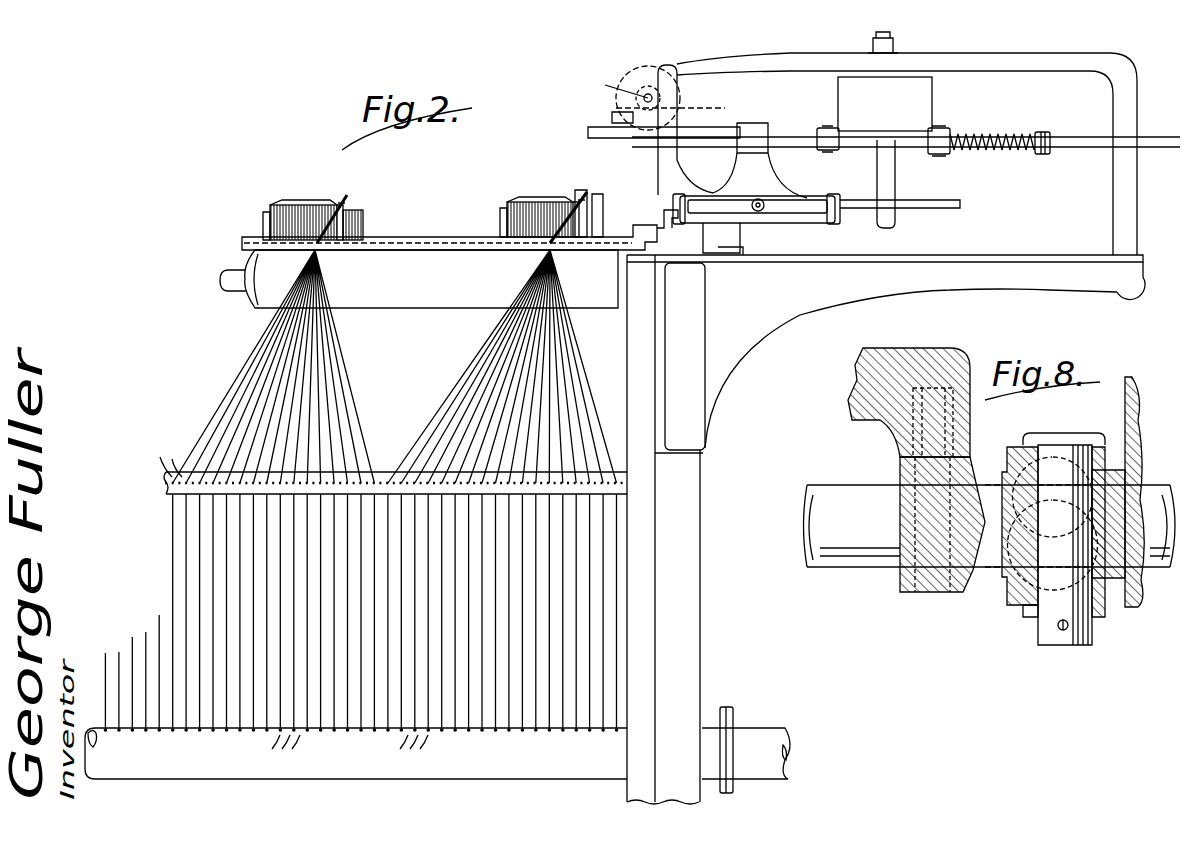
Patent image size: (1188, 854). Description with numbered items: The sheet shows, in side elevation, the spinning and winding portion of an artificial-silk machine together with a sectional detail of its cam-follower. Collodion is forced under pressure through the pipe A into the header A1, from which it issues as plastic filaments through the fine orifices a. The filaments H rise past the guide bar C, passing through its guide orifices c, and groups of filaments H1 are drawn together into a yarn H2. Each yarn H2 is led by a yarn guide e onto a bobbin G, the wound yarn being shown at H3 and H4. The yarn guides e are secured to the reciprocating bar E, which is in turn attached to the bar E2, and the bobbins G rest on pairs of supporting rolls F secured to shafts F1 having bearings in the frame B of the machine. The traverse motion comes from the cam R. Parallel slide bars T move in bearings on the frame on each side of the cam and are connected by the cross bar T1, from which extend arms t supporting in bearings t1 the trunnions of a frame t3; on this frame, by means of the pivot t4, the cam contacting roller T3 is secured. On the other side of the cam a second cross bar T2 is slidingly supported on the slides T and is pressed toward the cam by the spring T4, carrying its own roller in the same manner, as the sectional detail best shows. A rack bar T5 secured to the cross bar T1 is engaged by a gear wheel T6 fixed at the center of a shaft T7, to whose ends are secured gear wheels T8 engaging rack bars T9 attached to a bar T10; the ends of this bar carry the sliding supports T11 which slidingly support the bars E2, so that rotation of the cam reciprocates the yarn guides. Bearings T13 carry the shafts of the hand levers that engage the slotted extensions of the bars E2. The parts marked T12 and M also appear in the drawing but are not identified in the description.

In FIG. 2, the pipe A is at (746, 750).
In FIG. 2, the header A1 is at (356, 753).
In FIG. 2, the fine orifices a is at (350, 750).
In FIG. 2, the frame B is at (666, 529).
In FIG. 2, the guide bar C is at (158, 493).
In FIG. 2, the guide orifices c is at (176, 470).
In FIG. 2, the filaments H is at (360, 612).
In FIG. 2, the groups of filaments H1 is at (395, 366).
In FIG. 2, the yarn H2 is at (576, 202).
In FIG. 2, the wound yarn H3 is at (540, 202).
In FIG. 2, the wound yarn H4 is at (613, 204).
In FIG. 2, the bobbin G is at (268, 218).
In FIG. 2, the yarn guide e is at (347, 196).
In FIG. 2, the reciprocating bar E is at (410, 237).
In FIG. 2, the bar E2 is at (938, 200).
In FIG. 2, the supporting rolls F is at (431, 279).
In FIG. 2, the shaft F1 is at (218, 282).
In FIG. 2, the slide bars T is at (1078, 150).
In FIG. 8, the slide bars T is at (990, 526).
In FIG. 2, the cross bar T1 is at (825, 142).
In FIG. 8, the cross bar T1 is at (947, 592).
In FIG. 2, the cross bar T2 is at (968, 133).
In FIG. 2, the cam contacting roller T3 is at (950, 118).
In FIG. 8, the cam contacting roller T3 is at (1113, 580).
In FIG. 2, the spring T4 is at (1008, 132).
In FIG. 2, the rack bar T5 is at (722, 112).
In FIG. 8, the rack bar T5 is at (865, 383).
In FIG. 2, the gear wheel T6 is at (612, 112).
In FIG. 2, the shaft T7 is at (615, 80).
In FIG. 2, the gear wheels T8 is at (648, 66).
In FIG. 2, the rack bars T9 is at (633, 138).
In FIG. 2, the bar T10 is at (755, 125).
In FIG. 2, the sliding supports T11 is at (760, 175).
In FIG. 2, the cradle T12 is at (820, 223).
In FIG. 2, the bearings T13 is at (755, 211).
In FIG. 2, the cam R is at (885, 81).
In FIG. 8, the cam R is at (1132, 425).
In FIG. 2, the hanger M is at (895, 222).
In FIG. 8, the arms t is at (990, 470).
In FIG. 8, the bearings t1 is at (1010, 610).
In FIG. 8, the frame t3 is at (1036, 440).
In FIG. 8, the pivot t4 is at (1068, 438).